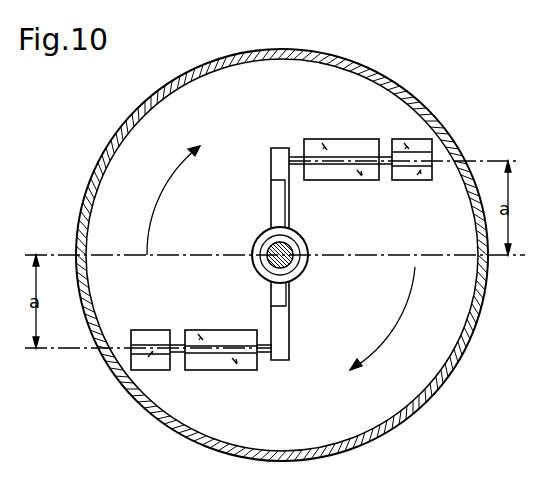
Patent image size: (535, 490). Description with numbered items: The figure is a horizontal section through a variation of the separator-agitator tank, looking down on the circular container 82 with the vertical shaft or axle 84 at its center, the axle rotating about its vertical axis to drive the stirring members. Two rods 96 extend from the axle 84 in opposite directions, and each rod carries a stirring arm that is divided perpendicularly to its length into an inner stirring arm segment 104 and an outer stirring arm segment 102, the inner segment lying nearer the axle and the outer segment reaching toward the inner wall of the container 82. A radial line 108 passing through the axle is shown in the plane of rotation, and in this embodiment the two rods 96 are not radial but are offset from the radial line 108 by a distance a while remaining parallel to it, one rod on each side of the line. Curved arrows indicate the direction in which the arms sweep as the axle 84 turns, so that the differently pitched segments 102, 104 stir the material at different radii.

The container 82 is at (437, 383).
The vertical shaft or axle 84 is at (290, 262).
The rods 96 is at (300, 148).
The outer stirring arm segment 102 is at (417, 179).
The inner stirring arm segment 104 is at (344, 148).
The radial line 108 is at (430, 258).